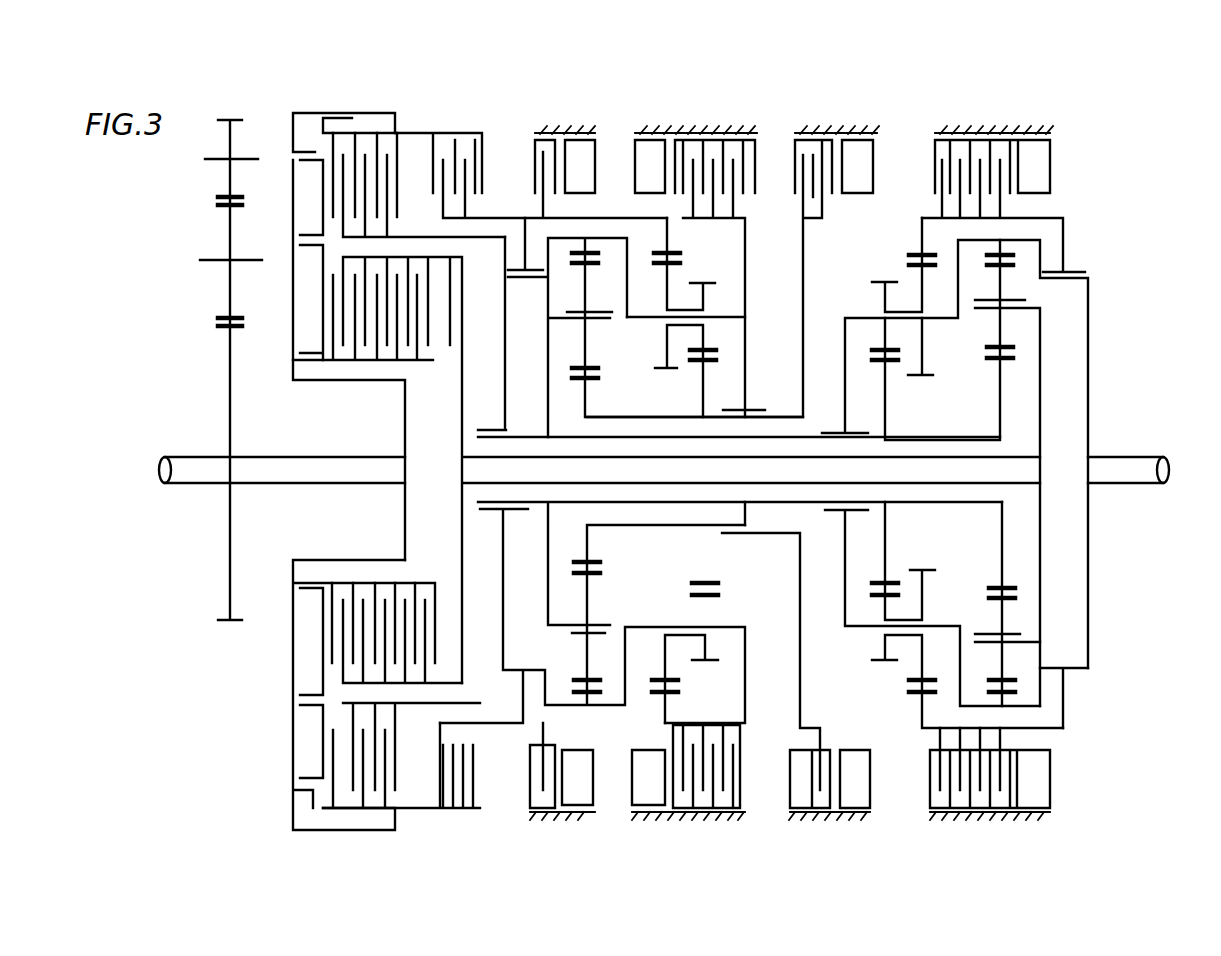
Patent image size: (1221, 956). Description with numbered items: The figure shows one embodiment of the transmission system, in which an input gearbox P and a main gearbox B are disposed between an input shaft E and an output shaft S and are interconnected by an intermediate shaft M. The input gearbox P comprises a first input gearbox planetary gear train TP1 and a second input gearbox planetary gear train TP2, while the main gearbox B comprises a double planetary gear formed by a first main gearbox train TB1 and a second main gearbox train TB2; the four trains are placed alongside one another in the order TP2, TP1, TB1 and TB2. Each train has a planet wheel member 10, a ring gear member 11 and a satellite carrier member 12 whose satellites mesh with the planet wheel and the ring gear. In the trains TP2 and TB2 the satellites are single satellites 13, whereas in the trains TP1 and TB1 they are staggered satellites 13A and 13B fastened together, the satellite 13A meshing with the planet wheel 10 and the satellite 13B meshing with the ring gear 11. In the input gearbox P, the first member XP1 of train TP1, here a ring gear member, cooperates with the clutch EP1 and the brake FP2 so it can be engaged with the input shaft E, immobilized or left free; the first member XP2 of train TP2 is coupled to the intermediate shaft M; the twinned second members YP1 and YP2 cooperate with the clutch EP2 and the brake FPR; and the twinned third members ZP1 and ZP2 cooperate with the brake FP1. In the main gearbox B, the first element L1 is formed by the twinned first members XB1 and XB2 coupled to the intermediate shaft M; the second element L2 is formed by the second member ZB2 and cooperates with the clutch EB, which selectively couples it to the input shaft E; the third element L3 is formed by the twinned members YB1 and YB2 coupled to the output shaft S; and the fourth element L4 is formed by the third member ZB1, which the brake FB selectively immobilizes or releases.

The input shaft E is at (172, 456).
The output shaft S is at (1150, 460).
The clutch EB is at (315, 330).
The clutch EP2 is at (395, 135).
The clutch EP1 is at (478, 135).
The brake FP2 is at (580, 131).
The brake FPR is at (722, 131).
The brake FP1 is at (848, 131).
The brake FB is at (1005, 131).
The first member of the second input gearbox train XP2 is at (544, 338).
The second member of the second input gearbox train YP2 is at (580, 256).
The third member of the second input gearbox train ZP2 is at (590, 393).
The first member of the first input gearbox train XP1 is at (672, 248).
The second member of the first input gearbox train YP1 is at (727, 313).
The third member of the first input gearbox train ZP1 is at (703, 402).
The intermediate shaft M is at (810, 433).
The third member of the first main gearbox train ZB1 is at (920, 244).
The third member of the second main gearbox train YB2 is at (1002, 248).
The second member of the first main gearbox train YB1 is at (860, 318).
The second member of the second main gearbox train ZB2 is at (1022, 308).
The first member of the first main gearbox train XB1 is at (905, 412).
The first member of the second main gearbox train XB2 is at (997, 425).
The first element L1 is at (936, 437).
The second element L2 is at (1042, 312).
The third element L3 is at (940, 313).
The fourth element L4 is at (923, 218).
The second input gearbox planetary gear train TP2 is at (570, 636).
The first input gearbox planetary gear train TP1 is at (715, 640).
The first main gearbox planetary gear train TB1 is at (873, 636).
The second main gearbox planetary gear train TB2 is at (1010, 638).
The planet wheel member 10 is at (587, 543).
The ring gear member 11 is at (595, 700).
The satellite carrier member 12 is at (558, 625).
The satellite 13 is at (590, 607).
The satellite 13A is at (712, 605).
The satellite 13B is at (662, 607).
The input gearbox P is at (683, 813).
The main gearbox B is at (972, 815).